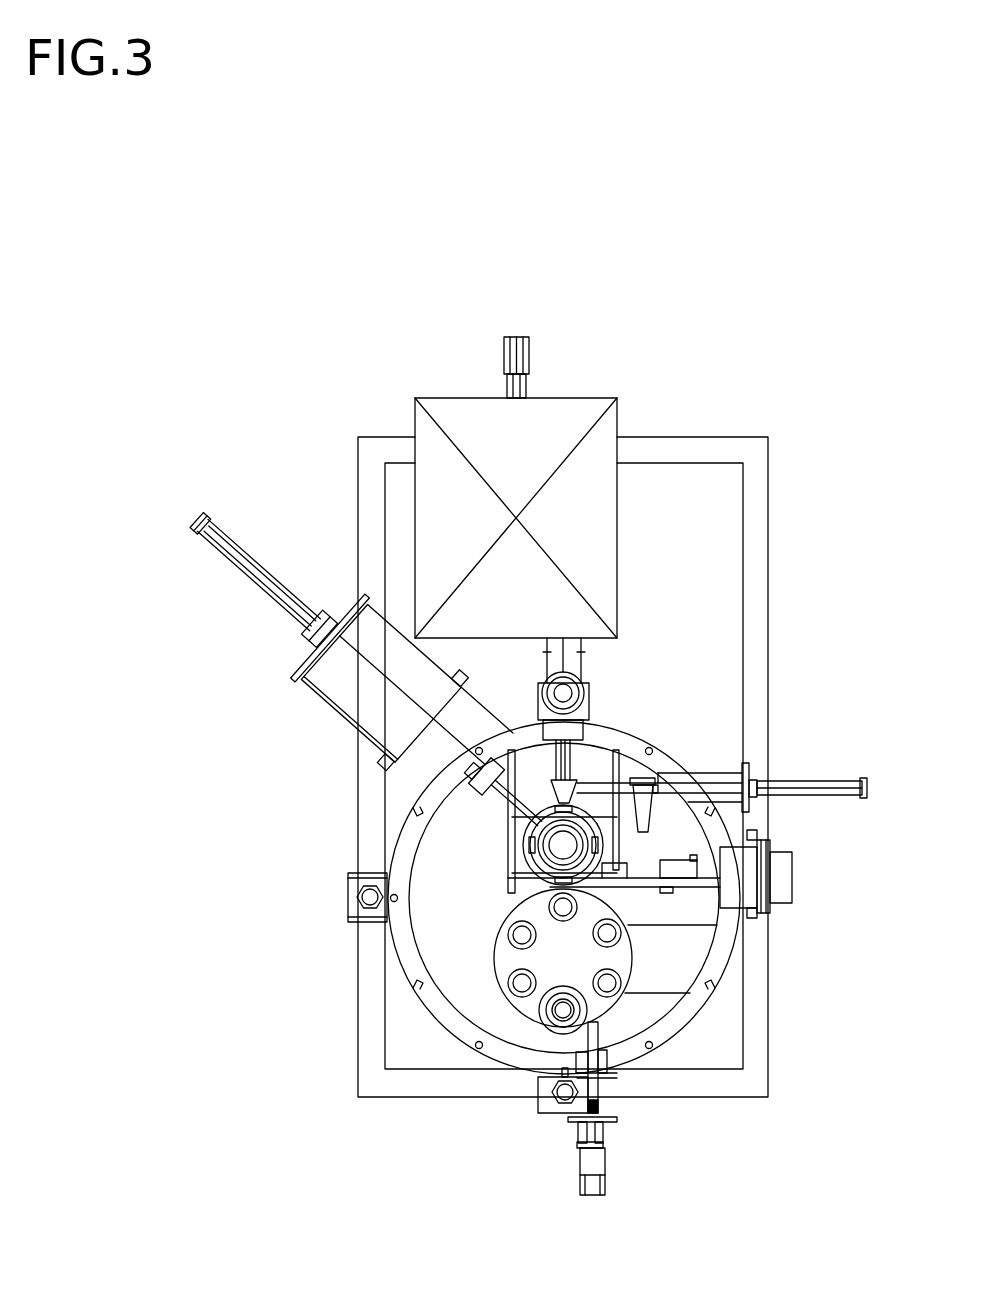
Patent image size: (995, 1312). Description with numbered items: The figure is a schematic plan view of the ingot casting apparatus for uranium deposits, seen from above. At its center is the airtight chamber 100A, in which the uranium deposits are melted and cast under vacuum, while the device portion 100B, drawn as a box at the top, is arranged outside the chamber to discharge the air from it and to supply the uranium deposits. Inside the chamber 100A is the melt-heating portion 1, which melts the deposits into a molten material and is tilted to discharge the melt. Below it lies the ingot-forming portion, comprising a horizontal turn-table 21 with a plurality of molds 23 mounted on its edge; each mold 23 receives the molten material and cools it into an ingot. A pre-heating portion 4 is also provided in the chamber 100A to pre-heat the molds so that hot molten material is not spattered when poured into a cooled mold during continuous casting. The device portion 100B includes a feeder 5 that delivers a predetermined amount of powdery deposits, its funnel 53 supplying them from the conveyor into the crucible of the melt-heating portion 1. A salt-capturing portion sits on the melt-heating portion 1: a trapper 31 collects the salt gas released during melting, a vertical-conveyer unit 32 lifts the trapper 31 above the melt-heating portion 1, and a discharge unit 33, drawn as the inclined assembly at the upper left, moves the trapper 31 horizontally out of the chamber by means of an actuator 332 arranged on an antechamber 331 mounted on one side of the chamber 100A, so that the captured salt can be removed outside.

The melt-heating portion 1 is at (537, 884).
The turn-table 21 is at (547, 957).
The molds 23 is at (623, 987).
The pre-heating portion 4 is at (540, 1032).
The feeder 5 is at (590, 672).
The funnel 53 is at (573, 760).
The trapper 31 is at (557, 845).
The vertical-conveyer unit 32 is at (412, 809).
The discharge unit 33 is at (296, 689).
The antechamber 331 is at (323, 680).
The actuator 332 is at (262, 573).
The chamber 100A is at (725, 960).
The device portion 100B is at (453, 403).